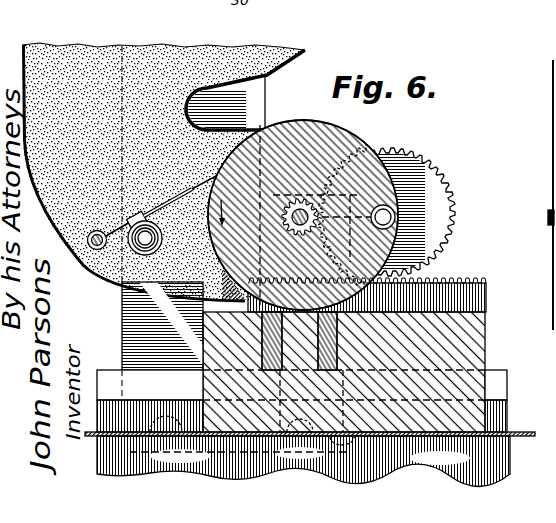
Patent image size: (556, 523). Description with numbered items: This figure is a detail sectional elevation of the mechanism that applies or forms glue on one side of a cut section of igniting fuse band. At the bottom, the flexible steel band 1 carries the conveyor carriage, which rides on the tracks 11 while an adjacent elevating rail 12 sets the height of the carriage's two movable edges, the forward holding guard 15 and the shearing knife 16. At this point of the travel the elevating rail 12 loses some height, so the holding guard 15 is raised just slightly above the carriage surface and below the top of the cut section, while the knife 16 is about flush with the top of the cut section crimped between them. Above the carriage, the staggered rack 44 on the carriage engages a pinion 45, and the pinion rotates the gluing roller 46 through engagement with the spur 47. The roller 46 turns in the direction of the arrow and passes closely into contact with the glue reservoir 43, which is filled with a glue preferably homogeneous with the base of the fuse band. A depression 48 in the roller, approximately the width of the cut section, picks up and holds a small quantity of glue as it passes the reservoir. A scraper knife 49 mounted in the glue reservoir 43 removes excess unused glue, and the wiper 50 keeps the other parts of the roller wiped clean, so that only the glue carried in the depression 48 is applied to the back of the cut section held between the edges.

The flexible steel band 1 is at (518, 432).
The tracks 11 is at (502, 388).
The elevating rail 12 is at (498, 372).
The holding guard 15 is at (270, 334).
The shearing knife 16 is at (340, 336).
The glue reservoir 43 is at (24, 90).
The staggered rack 44 is at (478, 283).
The pinion 45 is at (432, 222).
The gluing roller 46 is at (320, 158).
The spur 47 is at (299, 200).
The depression 48 is at (387, 264).
The scraper knife 49 is at (130, 192).
The wiper 50 is at (122, 280).